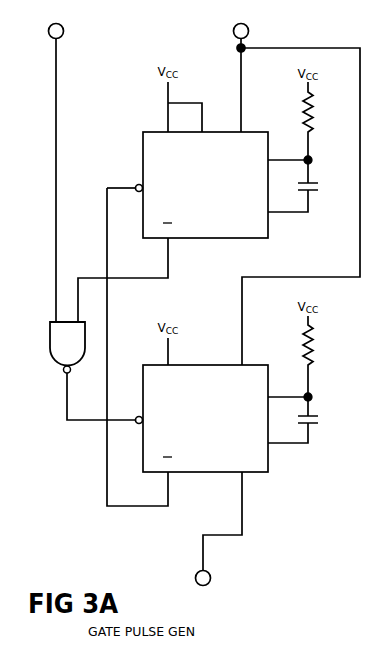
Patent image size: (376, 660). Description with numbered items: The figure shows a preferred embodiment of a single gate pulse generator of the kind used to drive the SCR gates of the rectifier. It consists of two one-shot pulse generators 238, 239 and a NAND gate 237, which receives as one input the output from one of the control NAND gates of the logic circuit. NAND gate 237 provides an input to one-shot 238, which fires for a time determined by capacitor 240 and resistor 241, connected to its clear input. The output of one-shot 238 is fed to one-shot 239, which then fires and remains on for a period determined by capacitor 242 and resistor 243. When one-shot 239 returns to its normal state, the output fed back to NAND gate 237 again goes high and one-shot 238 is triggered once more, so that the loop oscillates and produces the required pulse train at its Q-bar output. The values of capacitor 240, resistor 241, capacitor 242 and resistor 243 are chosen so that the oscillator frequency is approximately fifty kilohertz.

The NAND gate 237 is at (83, 352).
The one-shot pulse generator 238 is at (143, 365).
The one-shot pulse generator 239 is at (143, 132).
The capacitor 240 is at (320, 420).
The resistor 241 is at (313, 348).
The capacitor 242 is at (319, 187).
The resistor 243 is at (312, 122).